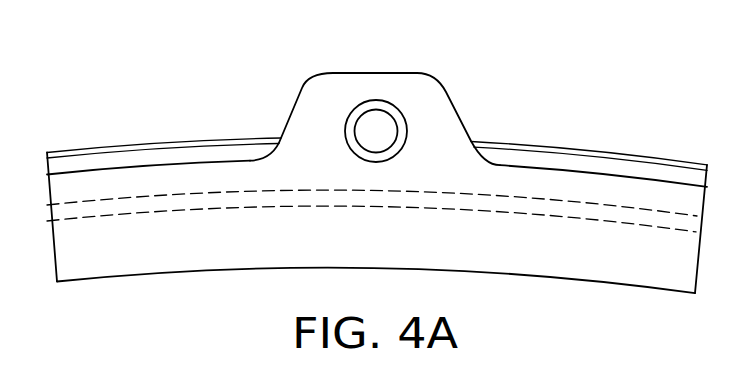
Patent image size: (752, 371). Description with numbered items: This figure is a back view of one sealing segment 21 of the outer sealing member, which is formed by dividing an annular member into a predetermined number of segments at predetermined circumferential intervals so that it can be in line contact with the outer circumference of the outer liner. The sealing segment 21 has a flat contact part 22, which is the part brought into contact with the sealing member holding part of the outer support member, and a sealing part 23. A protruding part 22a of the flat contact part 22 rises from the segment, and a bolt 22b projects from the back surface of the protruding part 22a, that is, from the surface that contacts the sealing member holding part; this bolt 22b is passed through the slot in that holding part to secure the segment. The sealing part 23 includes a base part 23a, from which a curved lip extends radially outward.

The sealing segment 21 is at (549, 127).
The flat contact part 22 is at (243, 149).
The protruding part 22a is at (382, 72).
The bolt 22b is at (388, 137).
The sealing part 23 is at (162, 142).
The base part 23a is at (95, 198).